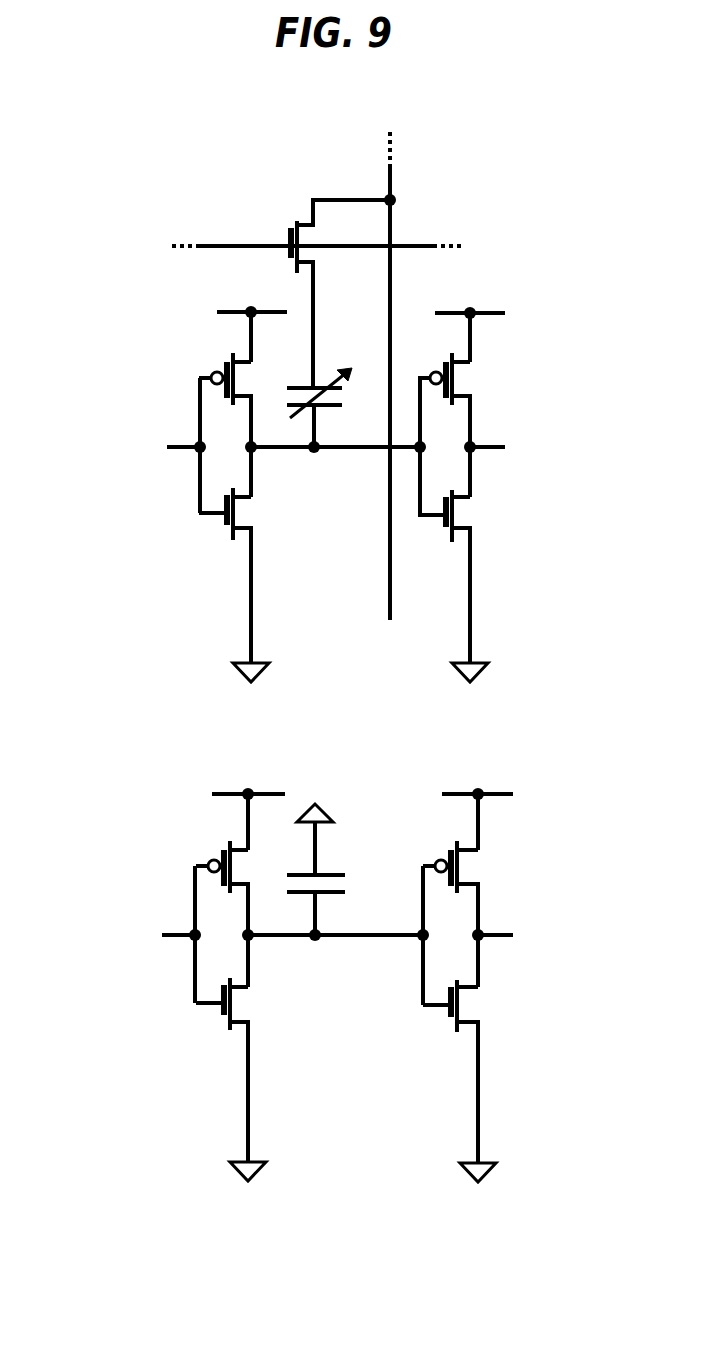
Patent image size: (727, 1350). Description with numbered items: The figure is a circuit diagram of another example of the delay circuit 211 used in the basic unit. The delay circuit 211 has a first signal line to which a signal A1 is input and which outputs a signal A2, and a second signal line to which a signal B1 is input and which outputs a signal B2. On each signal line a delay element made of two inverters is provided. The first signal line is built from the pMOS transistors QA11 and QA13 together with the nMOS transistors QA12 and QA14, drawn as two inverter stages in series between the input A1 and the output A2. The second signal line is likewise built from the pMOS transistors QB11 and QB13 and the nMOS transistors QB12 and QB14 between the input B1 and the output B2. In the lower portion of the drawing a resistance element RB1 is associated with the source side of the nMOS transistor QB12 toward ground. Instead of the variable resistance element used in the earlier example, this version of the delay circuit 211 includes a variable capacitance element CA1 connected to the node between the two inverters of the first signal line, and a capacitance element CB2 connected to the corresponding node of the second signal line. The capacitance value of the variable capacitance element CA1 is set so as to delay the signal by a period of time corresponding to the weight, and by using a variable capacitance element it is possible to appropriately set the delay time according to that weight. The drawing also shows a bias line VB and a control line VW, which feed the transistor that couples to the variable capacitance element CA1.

The delay circuit 211 is at (383, 1282).
The pMOS transistor QA11 is at (217, 362).
The nMOS transistor QA12 is at (217, 528).
The pMOS transistor QA13 is at (482, 362).
The nMOS transistor QA14 is at (482, 527).
The variable capacitance element CA1 is at (326, 412).
The pMOS transistor QB11 is at (213, 850).
The nMOS transistor QB12 is at (213, 1022).
The pMOS transistor QB13 is at (485, 848).
The nMOS transistor QB14 is at (487, 1022).
The capacitance element CB2 is at (327, 895).
The resistance element RB1 is at (232, 1102).
The bias voltage line VB is at (388, 361).
The control voltage line VW is at (287, 246).
The signal A1 is at (160, 452).
The signal A2 is at (508, 452).
The signal B1 is at (153, 941).
The signal B2 is at (518, 941).